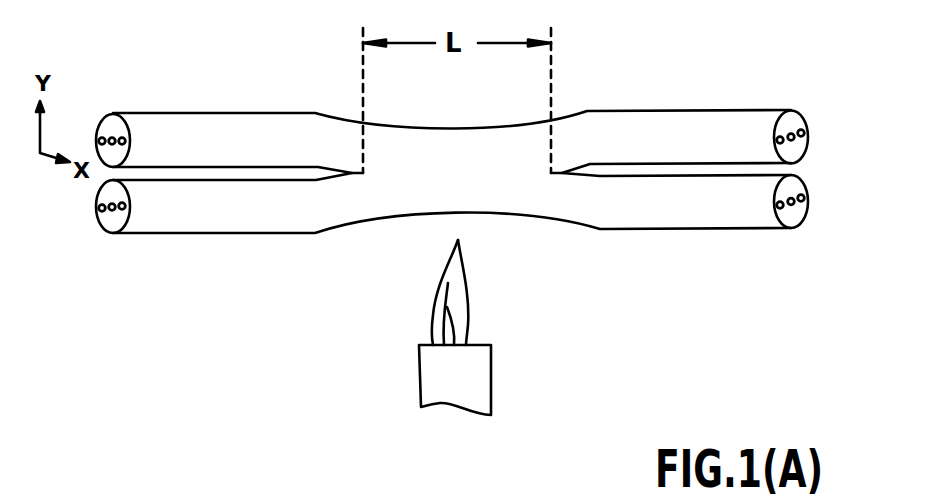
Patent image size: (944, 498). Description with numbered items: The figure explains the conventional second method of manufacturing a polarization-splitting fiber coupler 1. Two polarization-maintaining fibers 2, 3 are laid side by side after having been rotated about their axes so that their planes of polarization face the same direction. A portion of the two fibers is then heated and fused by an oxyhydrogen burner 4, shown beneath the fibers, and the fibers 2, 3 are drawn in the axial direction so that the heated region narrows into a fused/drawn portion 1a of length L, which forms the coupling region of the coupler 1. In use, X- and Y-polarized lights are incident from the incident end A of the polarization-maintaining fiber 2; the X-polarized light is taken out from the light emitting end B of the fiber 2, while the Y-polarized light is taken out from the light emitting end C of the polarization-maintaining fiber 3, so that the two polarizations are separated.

The polarization-splitting fiber coupler 1 is at (472, 155).
The fused/drawn portion 1a is at (410, 127).
The polarization-maintaining fiber 2 is at (160, 113).
The polarization-maintaining fiber 3 is at (153, 235).
The oxyhydrogen burner 4 is at (491, 378).
The incident end A is at (115, 130).
The light emitting end B is at (795, 111).
The light emitting end C is at (800, 173).